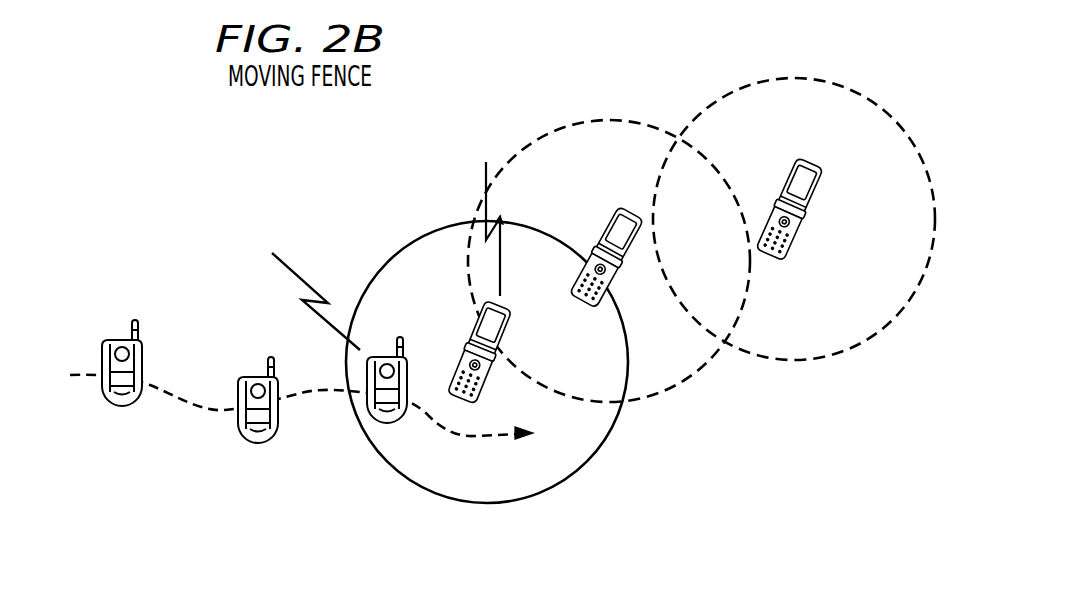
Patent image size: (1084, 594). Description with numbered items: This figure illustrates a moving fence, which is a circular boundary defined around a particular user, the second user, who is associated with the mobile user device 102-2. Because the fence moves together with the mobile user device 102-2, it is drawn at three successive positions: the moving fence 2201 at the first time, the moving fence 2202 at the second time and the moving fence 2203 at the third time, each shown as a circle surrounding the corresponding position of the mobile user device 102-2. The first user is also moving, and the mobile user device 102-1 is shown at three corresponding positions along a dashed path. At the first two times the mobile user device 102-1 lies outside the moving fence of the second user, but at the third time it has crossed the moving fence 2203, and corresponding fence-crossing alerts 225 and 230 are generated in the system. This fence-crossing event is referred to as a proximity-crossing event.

The mobile user device 102-1 is at (124, 340).
The mobile user device 102-2 is at (808, 221).
The fence-crossing alert 225 is at (285, 263).
The fence-crossing alert 230 is at (485, 176).
The moving fence at time t1 2201 is at (794, 242).
The moving fence at time t2 2202 is at (615, 286).
The moving fence at time t3 2203 is at (487, 390).